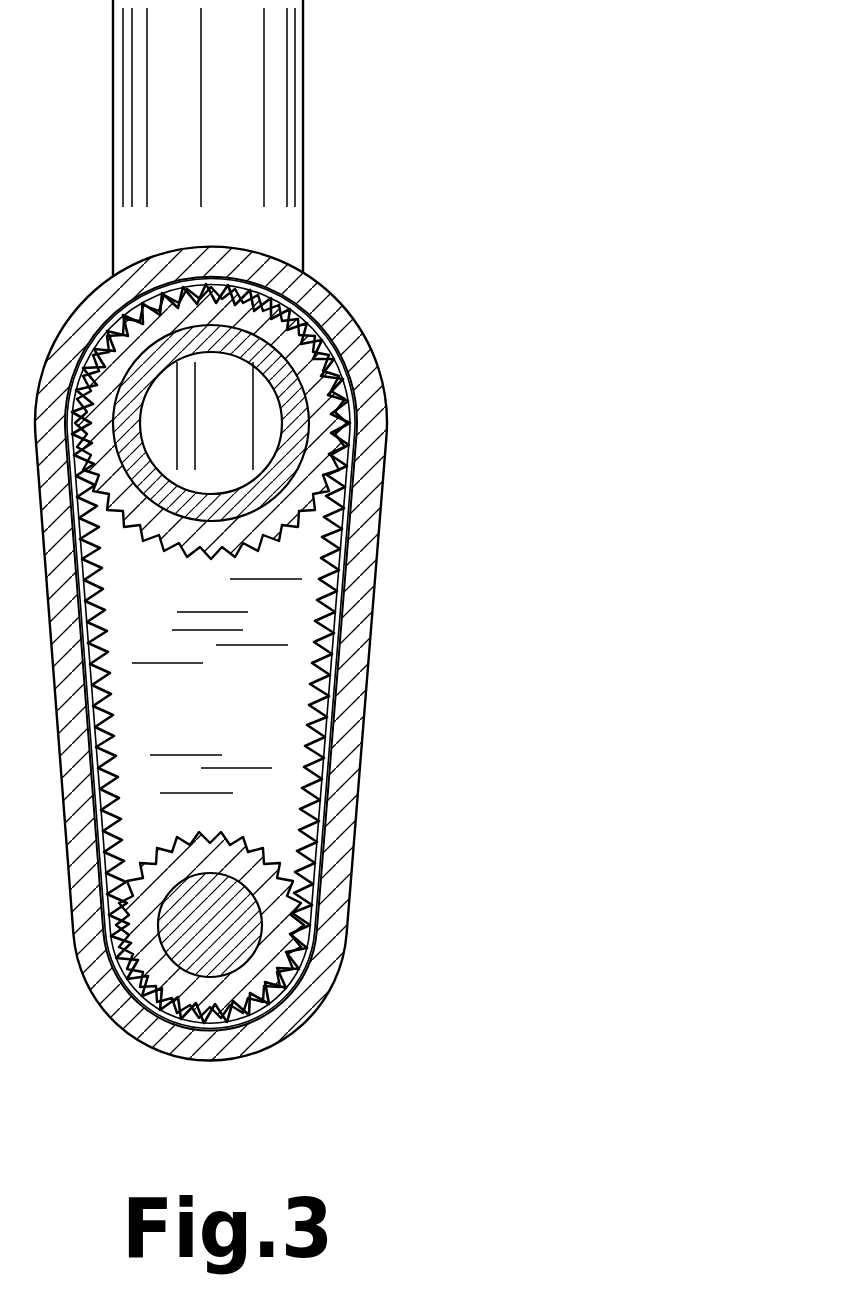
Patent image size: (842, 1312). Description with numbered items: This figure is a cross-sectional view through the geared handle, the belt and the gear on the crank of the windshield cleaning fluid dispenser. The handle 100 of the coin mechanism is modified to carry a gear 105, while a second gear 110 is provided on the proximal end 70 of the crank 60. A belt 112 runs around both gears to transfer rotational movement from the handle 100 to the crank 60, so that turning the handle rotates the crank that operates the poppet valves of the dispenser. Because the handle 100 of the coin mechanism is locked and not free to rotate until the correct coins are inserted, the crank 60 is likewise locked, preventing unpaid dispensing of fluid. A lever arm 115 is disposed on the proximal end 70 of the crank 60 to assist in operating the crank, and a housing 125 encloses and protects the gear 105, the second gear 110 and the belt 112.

The lever arm 115 is at (278, 48).
The proximal end 70 is at (272, 365).
The crank 60 is at (305, 430).
The belt 112 is at (333, 632).
The housing 125 is at (350, 712).
The gear 105 is at (247, 870).
The handle 100 is at (227, 933).
The second gear 110 is at (250, 537).